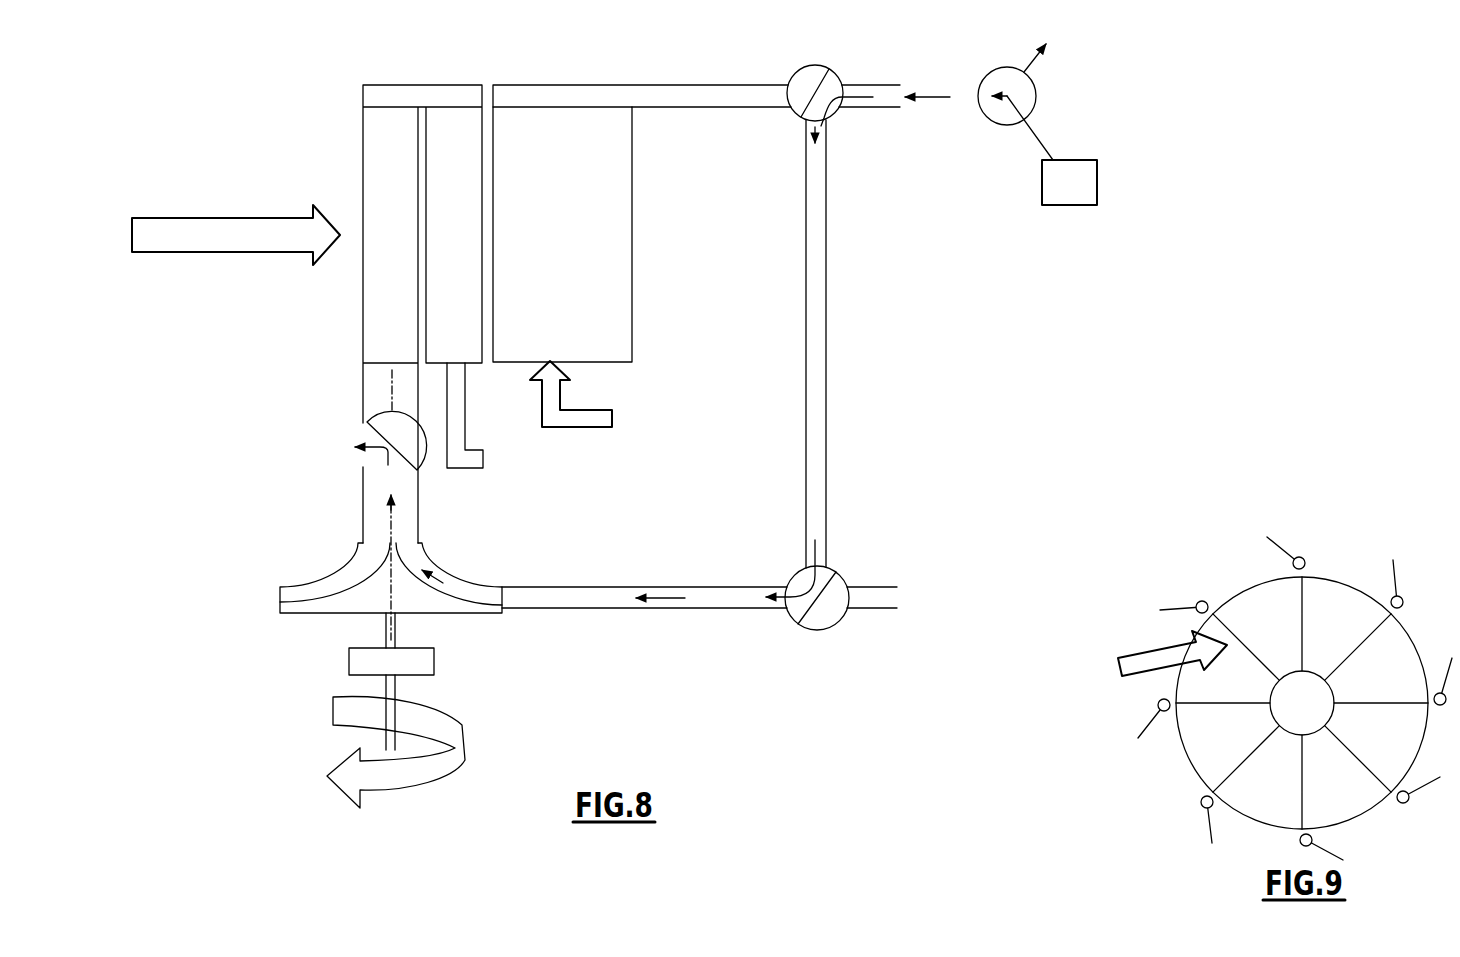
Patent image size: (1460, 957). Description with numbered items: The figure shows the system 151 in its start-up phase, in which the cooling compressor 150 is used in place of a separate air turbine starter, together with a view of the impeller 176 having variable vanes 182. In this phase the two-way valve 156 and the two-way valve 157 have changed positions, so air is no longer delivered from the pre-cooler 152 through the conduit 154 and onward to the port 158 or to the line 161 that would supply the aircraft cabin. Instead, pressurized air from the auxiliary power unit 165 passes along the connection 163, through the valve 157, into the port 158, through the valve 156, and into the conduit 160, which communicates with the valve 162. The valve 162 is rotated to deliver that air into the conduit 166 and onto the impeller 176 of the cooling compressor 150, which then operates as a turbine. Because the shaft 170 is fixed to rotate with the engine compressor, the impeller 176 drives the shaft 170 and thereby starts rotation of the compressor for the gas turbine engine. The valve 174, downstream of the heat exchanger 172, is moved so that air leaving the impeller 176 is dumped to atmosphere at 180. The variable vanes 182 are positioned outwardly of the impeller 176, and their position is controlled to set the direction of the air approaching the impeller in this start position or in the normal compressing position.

In FIG. 8, the cooling compressor 150 is at (588, 418).
In FIG. 8, the system 151 is at (150, 380).
In FIG. 8, the pre-cooler 152 is at (606, 291).
In FIG. 8, the conduit 154 is at (583, 85).
In FIG. 8, the two-way valve 156 is at (800, 78).
In FIG. 8, the two-way valve 157 is at (1036, 96).
In FIG. 8, the port 158 is at (875, 85).
In FIG. 8, the conduit 160 is at (817, 296).
In FIG. 8, the line 161 is at (1030, 48).
In FIG. 8, the valve 162 is at (835, 583).
In FIG. 8, the connection 163 is at (1035, 148).
In FIG. 8, the auxiliary power unit 165 is at (1097, 180).
In FIG. 8, the conduit 166 is at (648, 608).
In FIG. 8, the shaft 170 is at (468, 470).
In FIG. 8, the heat exchanger 172 is at (383, 213).
In FIG. 8, the valve 174 is at (365, 408).
In FIG. 8, the impeller 176 is at (313, 595).
In FIG. 9, the impeller 176 is at (1152, 777).
In FIG. 8, the dump to atmosphere 180 is at (343, 455).
In FIG. 9, the variable vanes 182 is at (1283, 545).